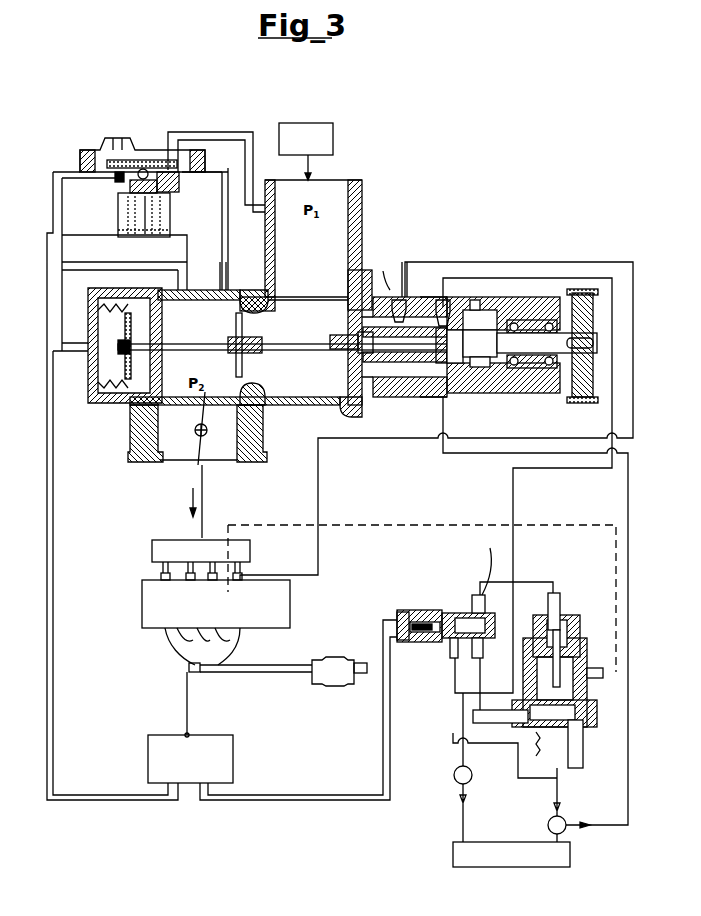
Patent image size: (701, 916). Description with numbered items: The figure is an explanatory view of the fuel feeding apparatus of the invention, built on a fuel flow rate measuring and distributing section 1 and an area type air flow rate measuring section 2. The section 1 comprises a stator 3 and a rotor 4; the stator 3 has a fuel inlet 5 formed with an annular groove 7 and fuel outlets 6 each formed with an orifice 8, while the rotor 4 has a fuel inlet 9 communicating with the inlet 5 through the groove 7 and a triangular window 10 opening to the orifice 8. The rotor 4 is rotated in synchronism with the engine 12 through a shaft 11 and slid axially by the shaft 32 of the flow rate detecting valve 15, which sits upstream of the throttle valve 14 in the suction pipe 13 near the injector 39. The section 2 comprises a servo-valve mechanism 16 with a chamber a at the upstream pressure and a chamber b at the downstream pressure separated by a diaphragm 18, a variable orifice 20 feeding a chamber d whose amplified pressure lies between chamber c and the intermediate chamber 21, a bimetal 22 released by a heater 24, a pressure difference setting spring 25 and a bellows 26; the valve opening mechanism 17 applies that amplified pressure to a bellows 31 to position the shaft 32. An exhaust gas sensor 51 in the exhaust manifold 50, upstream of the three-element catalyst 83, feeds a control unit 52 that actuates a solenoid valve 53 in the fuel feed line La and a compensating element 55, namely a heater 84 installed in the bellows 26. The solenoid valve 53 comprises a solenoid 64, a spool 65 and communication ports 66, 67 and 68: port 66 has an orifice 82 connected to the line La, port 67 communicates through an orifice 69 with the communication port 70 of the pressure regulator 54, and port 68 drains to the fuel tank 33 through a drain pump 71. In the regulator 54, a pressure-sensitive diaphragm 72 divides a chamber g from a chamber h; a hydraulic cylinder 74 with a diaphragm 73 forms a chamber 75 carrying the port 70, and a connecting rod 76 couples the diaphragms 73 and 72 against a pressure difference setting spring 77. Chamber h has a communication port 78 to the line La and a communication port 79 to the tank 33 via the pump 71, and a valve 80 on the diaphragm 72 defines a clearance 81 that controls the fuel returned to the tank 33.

The fuel flow rate measuring and distributing section 1 is at (418, 405).
The area type air flow rate measuring section 2 is at (96, 421).
The stator 3 is at (554, 378).
The rotor 4 is at (402, 360).
The fuel inlet 5 is at (441, 302).
The fuel outlets 6 is at (400, 297).
The annular groove 7 is at (452, 327).
The orifice 8 is at (408, 305).
The fuel inlet 9 is at (448, 370).
The triangular window 10 is at (372, 297).
The shaft 11 is at (530, 365).
The engine 12 is at (142, 608).
The suction pipe 13 is at (296, 405).
The throttle valve 14 is at (197, 458).
The flow rate detecting valve 15 is at (250, 320).
The servo-valve mechanism 16 is at (143, 112).
The valve opening mechanism 17 is at (78, 384).
The diaphragm 18 is at (190, 170).
The variable orifice 20 is at (165, 195).
The intermediate chamber 21 is at (200, 295).
The bimetal 22 is at (105, 150).
The heater 24 is at (117, 138).
The pressure difference setting spring 25 is at (125, 208).
The bellows 26 is at (131, 221).
The bellows 31 is at (125, 390).
The shaft 32 is at (300, 352).
The fuel tank 33 is at (570, 856).
The injector 39 is at (246, 565).
The exhaust manifold 50 is at (268, 673).
The exhaust gas sensor 51 is at (188, 670).
The control unit 52 is at (148, 758).
The solenoid valve 53 is at (402, 606).
The pressure regulator 54 is at (603, 683).
The compensating element 55 is at (160, 221).
The solenoid 64 is at (422, 642).
The spool 65 is at (428, 622).
The communication port 66 is at (483, 658).
The communication port 67 is at (470, 597).
The communication port 68 is at (452, 658).
The orifice 69 is at (488, 565).
The communication port 70 is at (558, 594).
The drain pump 71 is at (548, 821).
The pressure-sensitive diaphragm 72 is at (587, 722).
The diaphragm 73 is at (566, 626).
The hydraulic cylinder 74 is at (582, 631).
The chamber 75 is at (560, 617).
The connecting rod 76 is at (582, 650).
The pressure difference setting spring 77 is at (598, 705).
The communication port 78 is at (486, 724).
The communication port 79 is at (583, 758).
The valve 80 is at (566, 735).
The clearance 81 is at (550, 742).
The orifice 82 is at (482, 632).
The three-element catalyst 83 is at (330, 686).
The heater 84 is at (146, 228).
The chamber a is at (181, 158).
The chamber b is at (207, 178).
The chamber d is at (115, 180).
The chamber g is at (595, 660).
The chamber h is at (537, 740).
The fuel feed line La is at (515, 550).